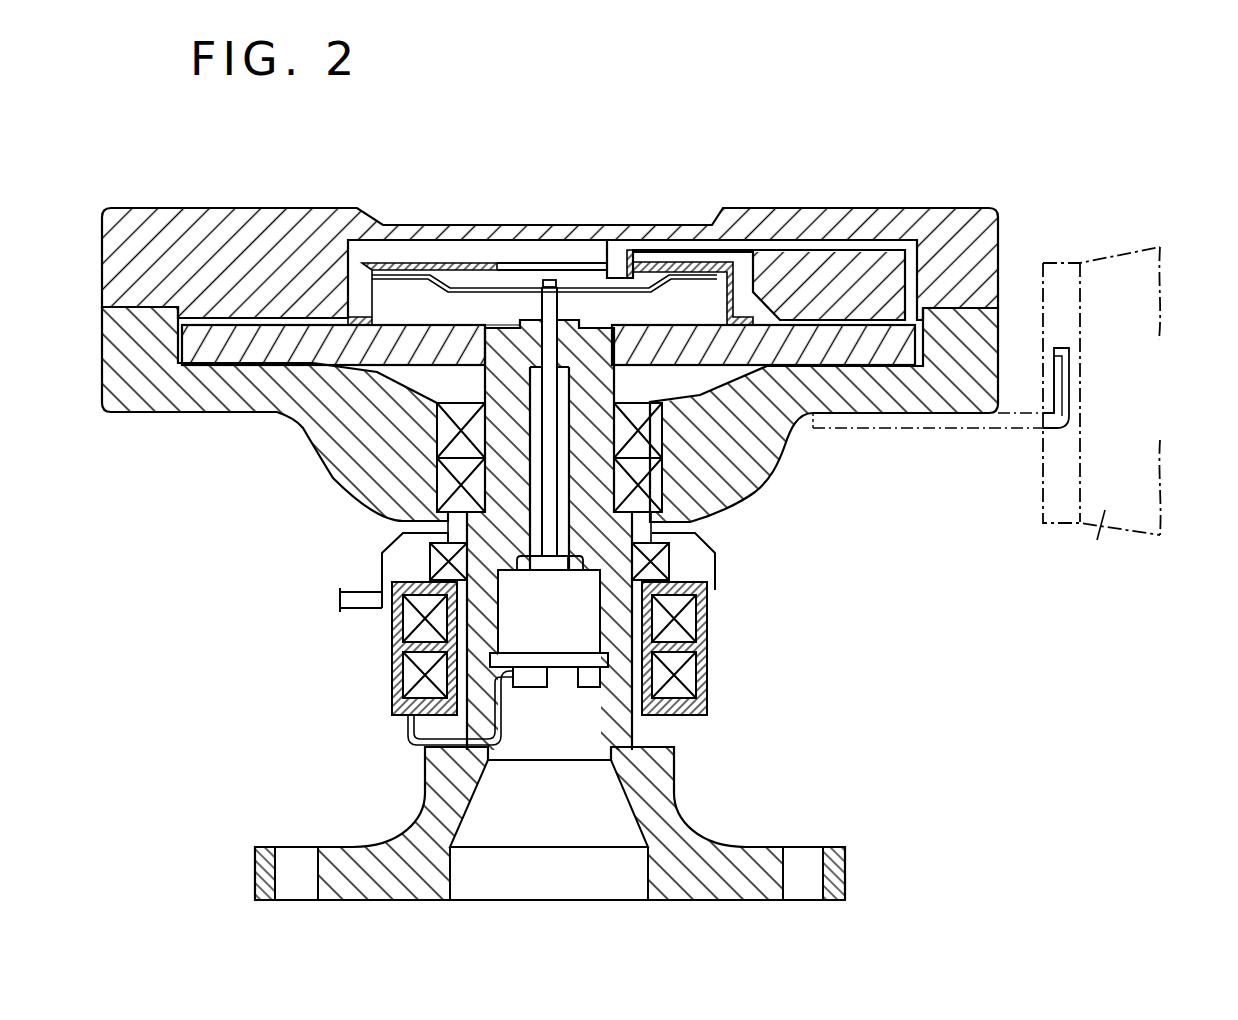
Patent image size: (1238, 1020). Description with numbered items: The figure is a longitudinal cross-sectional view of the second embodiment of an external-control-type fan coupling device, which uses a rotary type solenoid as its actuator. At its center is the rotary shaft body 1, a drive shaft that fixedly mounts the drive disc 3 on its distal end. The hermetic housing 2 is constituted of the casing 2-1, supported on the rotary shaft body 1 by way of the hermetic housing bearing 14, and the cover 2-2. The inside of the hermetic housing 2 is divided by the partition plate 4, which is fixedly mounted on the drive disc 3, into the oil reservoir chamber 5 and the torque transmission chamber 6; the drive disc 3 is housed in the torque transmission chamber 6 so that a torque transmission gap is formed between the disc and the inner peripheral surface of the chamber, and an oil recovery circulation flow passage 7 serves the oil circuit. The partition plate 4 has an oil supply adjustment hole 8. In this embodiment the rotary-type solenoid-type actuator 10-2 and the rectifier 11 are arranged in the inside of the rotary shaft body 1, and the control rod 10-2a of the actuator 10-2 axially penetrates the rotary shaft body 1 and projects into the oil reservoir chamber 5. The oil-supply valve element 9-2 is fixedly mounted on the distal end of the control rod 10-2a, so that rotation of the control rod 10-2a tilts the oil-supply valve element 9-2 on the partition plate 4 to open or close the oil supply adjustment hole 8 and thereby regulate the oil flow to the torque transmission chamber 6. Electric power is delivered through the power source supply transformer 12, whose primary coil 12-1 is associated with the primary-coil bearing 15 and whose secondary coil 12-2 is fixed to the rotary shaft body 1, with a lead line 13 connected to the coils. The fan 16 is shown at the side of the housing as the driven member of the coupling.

The rotary shaft body 1 is at (675, 790).
The hermetic housing 2 is at (971, 178).
The casing 2-1 is at (172, 400).
The cover 2-2 is at (252, 217).
The drive disc 3 is at (828, 355).
The partition plate 4 is at (483, 275).
The oil reservoir chamber 5 is at (387, 300).
The torque transmission chamber 6 is at (350, 372).
The oil recovery circulation flow passage 7 is at (823, 243).
The oil supply adjustment hole 8 is at (405, 265).
The oil-supply valve element 9-2 is at (450, 270).
The rotary-type solenoid-type actuator 10-2 is at (568, 635).
The control rod 10-2a is at (558, 300).
The rectifier 11 is at (526, 690).
The power source supply transformer 12 is at (362, 650).
The primary coil 12-1 is at (692, 622).
The secondary coil 12-2 is at (692, 682).
The lead line 13 is at (410, 742).
The hermetic housing bearing 14 is at (653, 487).
The primary-coil bearing 15 is at (665, 563).
The fan 16 is at (1100, 505).